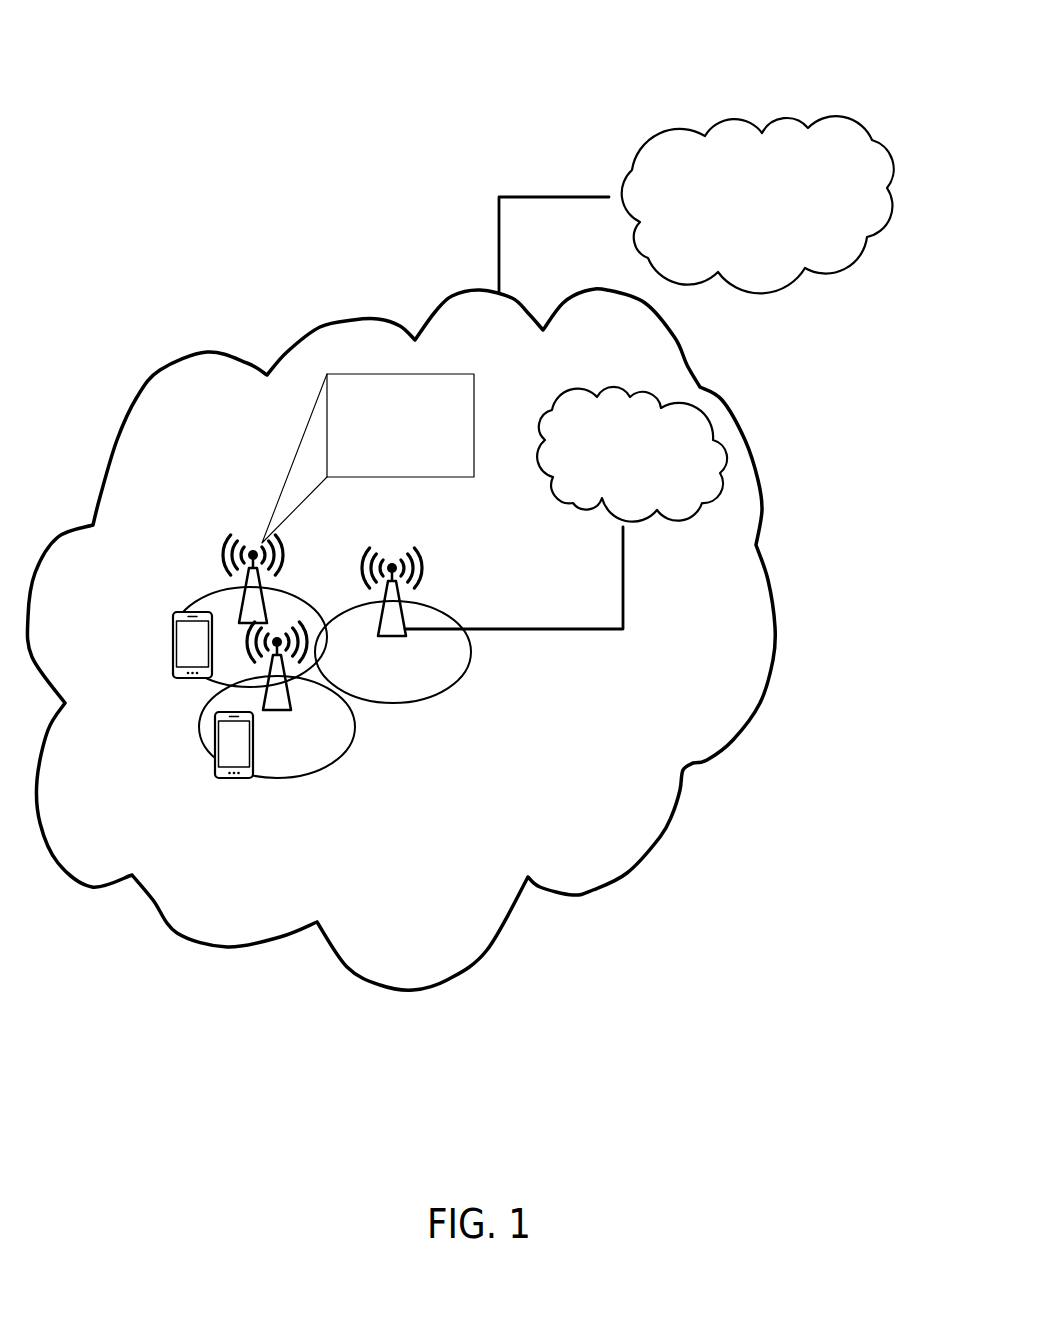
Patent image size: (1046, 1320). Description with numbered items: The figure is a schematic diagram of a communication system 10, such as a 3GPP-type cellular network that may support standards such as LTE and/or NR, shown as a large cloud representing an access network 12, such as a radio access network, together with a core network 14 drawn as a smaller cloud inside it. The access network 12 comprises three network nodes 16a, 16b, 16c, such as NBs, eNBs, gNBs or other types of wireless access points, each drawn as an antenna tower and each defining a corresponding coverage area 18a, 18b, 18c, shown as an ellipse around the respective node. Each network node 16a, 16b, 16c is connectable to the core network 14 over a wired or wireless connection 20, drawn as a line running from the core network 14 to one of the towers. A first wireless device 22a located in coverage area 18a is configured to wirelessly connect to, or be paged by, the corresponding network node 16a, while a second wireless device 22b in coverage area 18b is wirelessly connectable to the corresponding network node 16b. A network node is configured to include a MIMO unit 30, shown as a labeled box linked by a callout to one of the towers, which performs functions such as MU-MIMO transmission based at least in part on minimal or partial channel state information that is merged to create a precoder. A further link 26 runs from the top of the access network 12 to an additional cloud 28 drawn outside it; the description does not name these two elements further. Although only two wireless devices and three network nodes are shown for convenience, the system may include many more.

The communication system 10 is at (205, 37).
The access network 12 is at (401, 639).
The core network 14 is at (632, 454).
The network node 16a is at (287, 710).
The network node 16b is at (420, 572).
The network node 16c is at (222, 558).
The coverage area 18a is at (187, 600).
The coverage area 18b is at (353, 730).
The coverage area 18c is at (470, 652).
The connection 20 is at (623, 582).
The first wireless device 22a is at (175, 672).
The second wireless device 22b is at (213, 770).
The network connection link 26 is at (510, 195).
The external network cloud 28 is at (758, 204).
The MIMO unit 30 is at (368, 458).